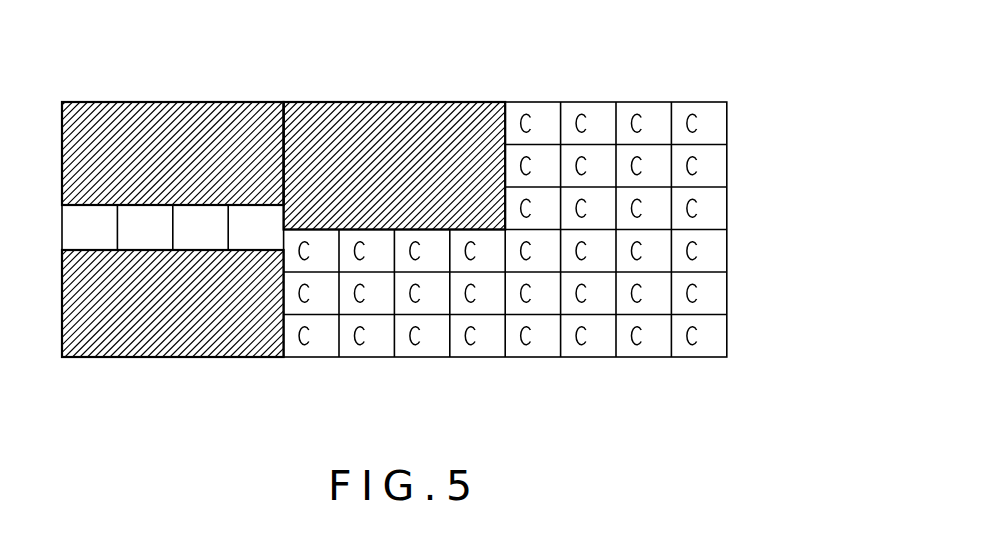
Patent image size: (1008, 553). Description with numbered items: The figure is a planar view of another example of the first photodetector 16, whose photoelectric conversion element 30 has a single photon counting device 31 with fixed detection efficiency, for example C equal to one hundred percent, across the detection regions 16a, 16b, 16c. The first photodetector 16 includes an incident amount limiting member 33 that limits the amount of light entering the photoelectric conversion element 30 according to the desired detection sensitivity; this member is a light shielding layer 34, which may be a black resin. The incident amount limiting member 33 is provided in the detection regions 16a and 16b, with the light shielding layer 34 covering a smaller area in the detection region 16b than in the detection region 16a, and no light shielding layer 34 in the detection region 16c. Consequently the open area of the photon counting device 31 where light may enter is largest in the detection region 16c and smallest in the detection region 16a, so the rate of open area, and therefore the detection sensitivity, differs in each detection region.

The first photodetector 16 is at (744, 176).
The detection region 16a is at (59, 98).
The detection region 16b is at (287, 98).
The detection region 16c is at (511, 98).
The photoelectric conversion element 30 is at (580, 229).
The photon counting device 31 is at (728, 297).
The incident amount limiting member 33 is at (314, 226).
The light shielding layer 34 is at (315, 100).